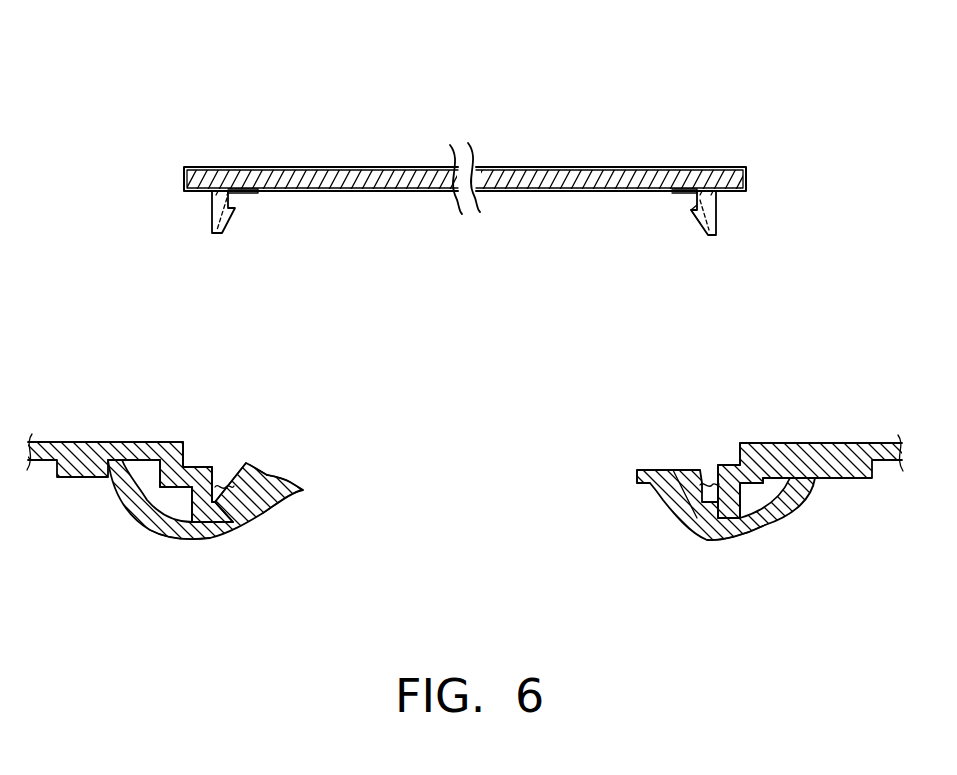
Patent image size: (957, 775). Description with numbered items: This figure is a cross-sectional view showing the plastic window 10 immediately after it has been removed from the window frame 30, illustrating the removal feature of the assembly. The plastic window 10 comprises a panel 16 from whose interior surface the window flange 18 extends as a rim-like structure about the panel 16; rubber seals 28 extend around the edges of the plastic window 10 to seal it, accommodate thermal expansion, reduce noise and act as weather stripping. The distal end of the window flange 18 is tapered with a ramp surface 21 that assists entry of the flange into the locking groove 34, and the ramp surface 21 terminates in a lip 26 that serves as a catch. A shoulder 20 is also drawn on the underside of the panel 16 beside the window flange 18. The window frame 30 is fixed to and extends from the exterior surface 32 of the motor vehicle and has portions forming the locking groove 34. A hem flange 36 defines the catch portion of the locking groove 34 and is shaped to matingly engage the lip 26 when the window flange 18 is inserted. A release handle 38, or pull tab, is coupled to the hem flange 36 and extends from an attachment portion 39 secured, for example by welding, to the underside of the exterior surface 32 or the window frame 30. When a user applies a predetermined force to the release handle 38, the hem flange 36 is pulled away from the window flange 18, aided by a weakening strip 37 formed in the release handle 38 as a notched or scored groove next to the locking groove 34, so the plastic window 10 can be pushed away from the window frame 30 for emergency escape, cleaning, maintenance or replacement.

The plastic window 10 is at (480, 90).
The panel 16 is at (300, 167).
The window flange 18 is at (722, 218).
The shoulder ledge 20 is at (243, 195).
The ramp surface 21 is at (226, 222).
The lip 26 is at (699, 222).
The rubber seals 28 is at (184, 178).
The window frame 30 is at (192, 446).
The exterior surface 32 is at (110, 460).
The locking groove 34 is at (226, 480).
The hem flange 36 is at (265, 470).
The weakening strip 37 is at (216, 542).
The release handle 38 is at (300, 485).
The attachment portion 39 is at (80, 470).